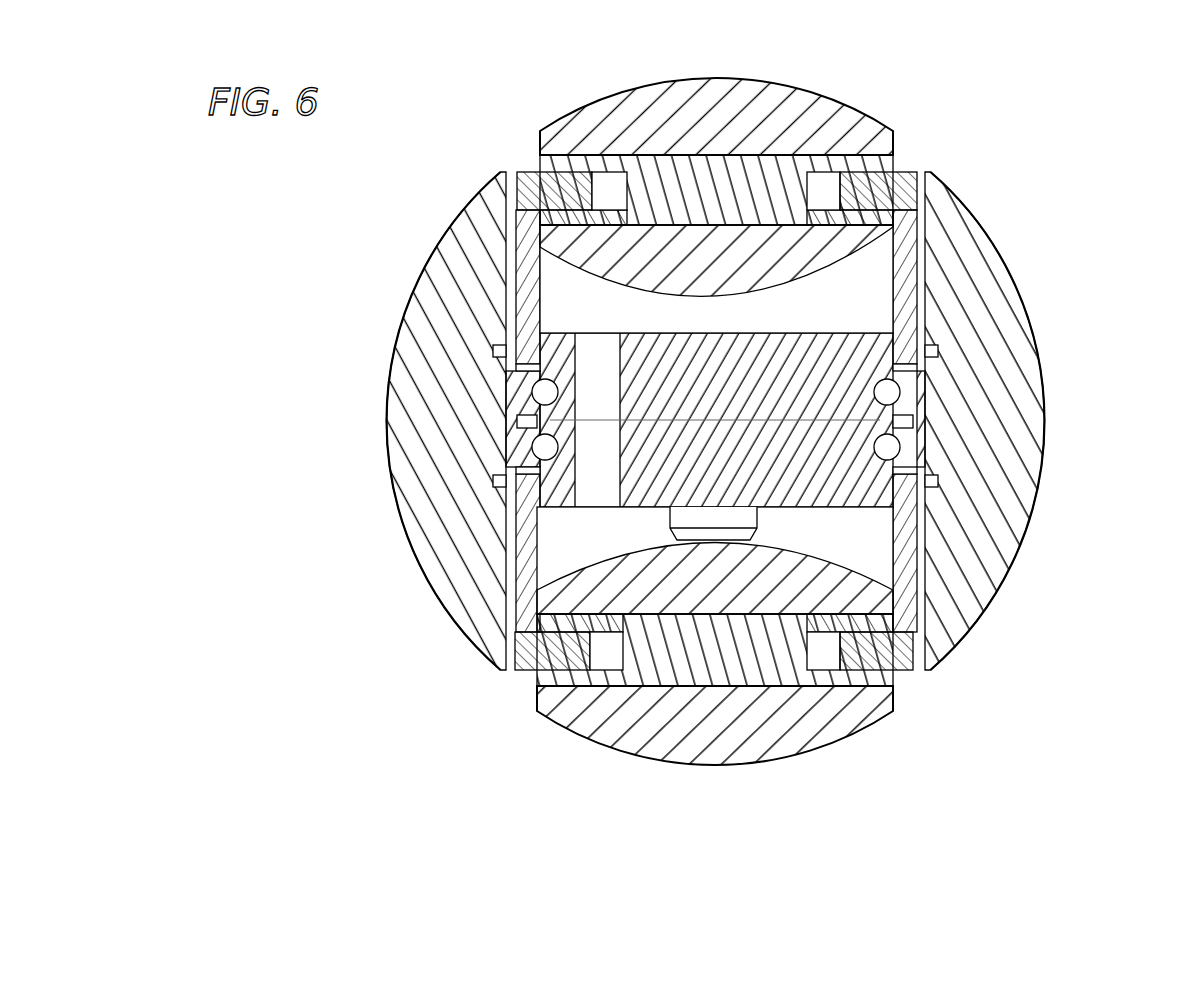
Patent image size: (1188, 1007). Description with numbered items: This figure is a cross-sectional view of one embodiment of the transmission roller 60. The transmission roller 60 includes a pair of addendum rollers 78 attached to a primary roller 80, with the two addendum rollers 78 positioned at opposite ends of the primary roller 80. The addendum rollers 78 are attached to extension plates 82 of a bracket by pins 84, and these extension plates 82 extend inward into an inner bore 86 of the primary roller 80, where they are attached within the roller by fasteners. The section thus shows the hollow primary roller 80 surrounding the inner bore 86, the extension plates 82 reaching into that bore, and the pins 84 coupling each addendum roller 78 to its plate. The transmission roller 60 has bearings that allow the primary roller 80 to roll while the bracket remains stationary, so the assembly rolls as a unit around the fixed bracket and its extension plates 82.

The transmission roller 60 is at (1078, 357).
The addendum rollers 78 is at (733, 103).
The primary roller 80 is at (1018, 437).
The extension plates 82 is at (903, 590).
The pins 84 is at (875, 653).
The inner bore 86 is at (892, 293).